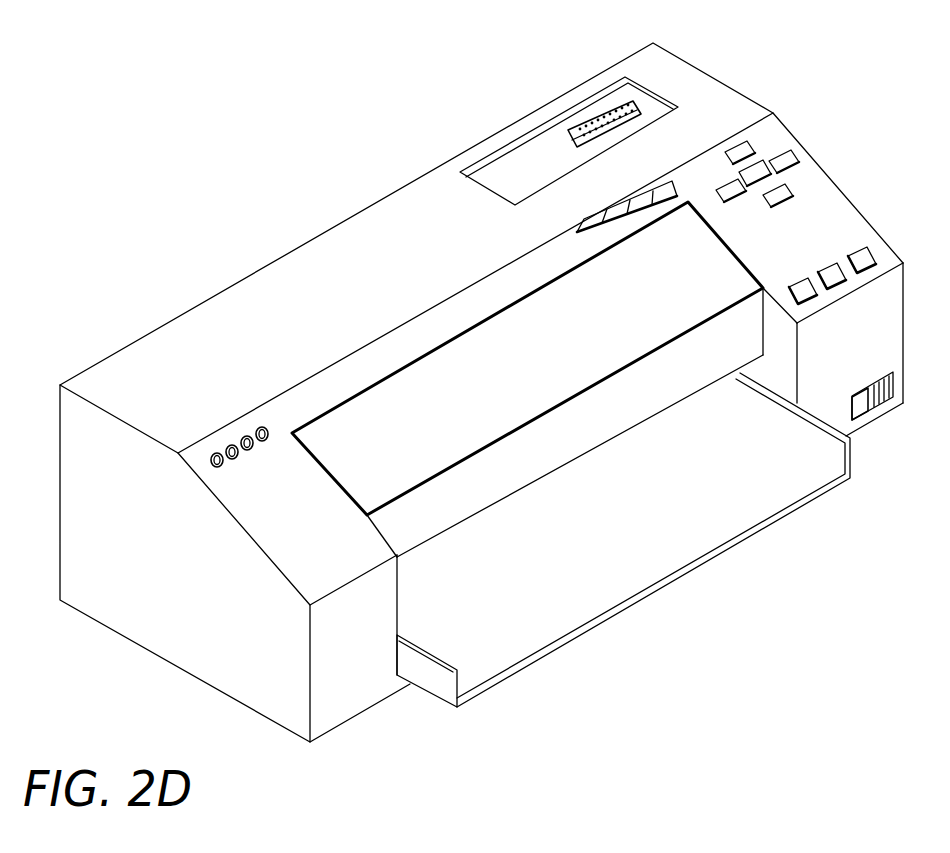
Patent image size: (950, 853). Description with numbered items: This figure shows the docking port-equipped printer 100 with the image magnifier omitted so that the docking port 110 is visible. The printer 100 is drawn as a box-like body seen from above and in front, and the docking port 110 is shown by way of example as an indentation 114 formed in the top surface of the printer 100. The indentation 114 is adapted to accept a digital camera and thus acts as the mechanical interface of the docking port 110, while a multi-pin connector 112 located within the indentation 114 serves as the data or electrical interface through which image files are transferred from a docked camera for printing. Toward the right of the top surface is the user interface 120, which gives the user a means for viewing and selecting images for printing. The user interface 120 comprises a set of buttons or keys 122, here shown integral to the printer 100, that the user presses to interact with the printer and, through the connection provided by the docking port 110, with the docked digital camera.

The docking port-equipped printer 100 is at (183, 126).
The docking port 110 is at (551, 111).
The multi-pin connector 112 is at (625, 103).
The indentation 114 is at (480, 177).
The user interface 120 is at (733, 187).
The keys 122 is at (560, 232).